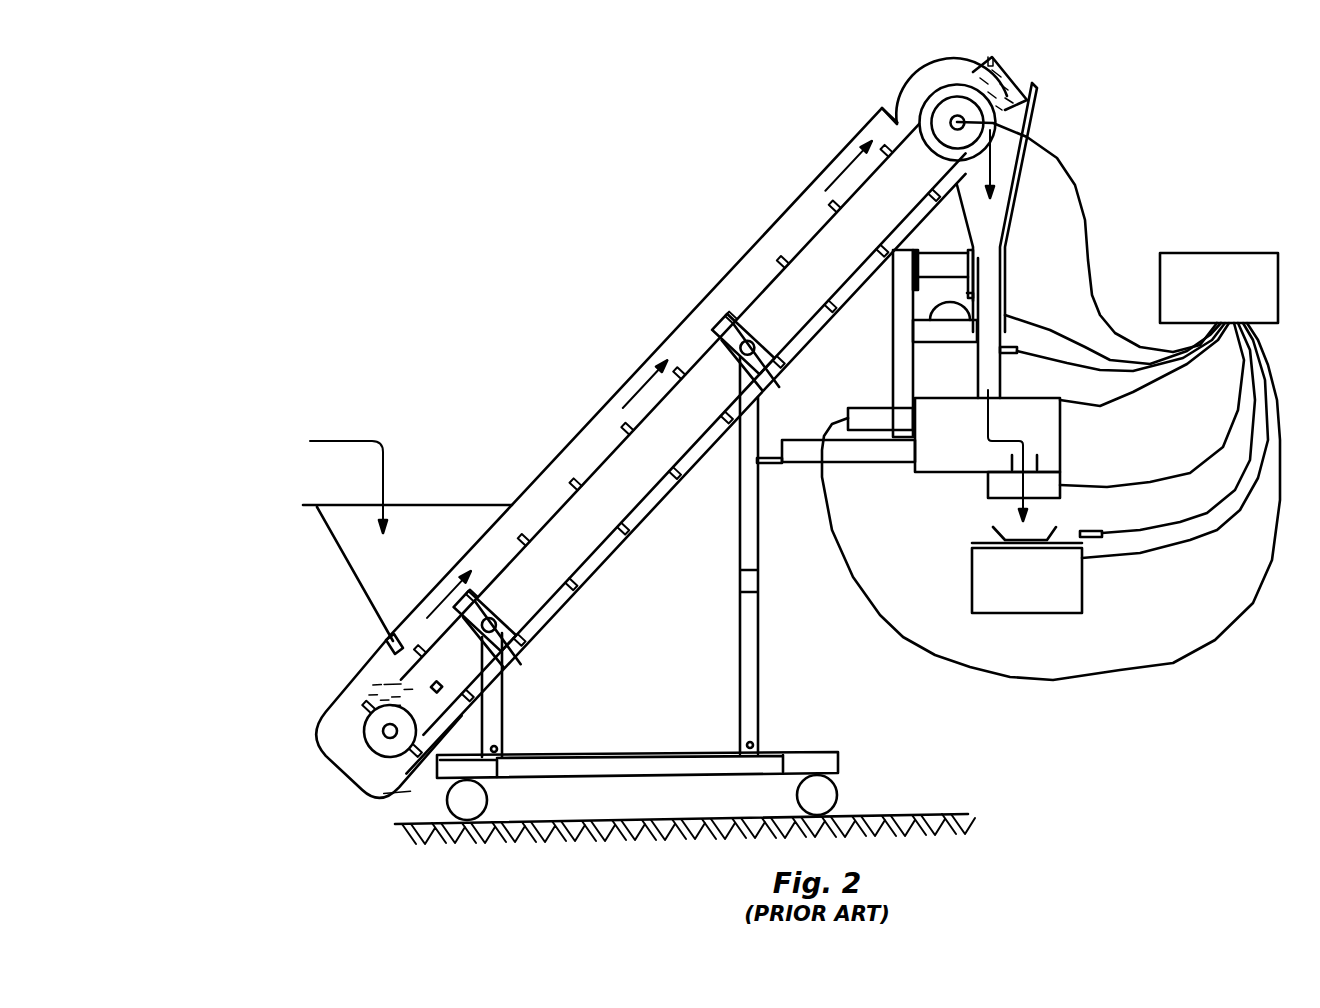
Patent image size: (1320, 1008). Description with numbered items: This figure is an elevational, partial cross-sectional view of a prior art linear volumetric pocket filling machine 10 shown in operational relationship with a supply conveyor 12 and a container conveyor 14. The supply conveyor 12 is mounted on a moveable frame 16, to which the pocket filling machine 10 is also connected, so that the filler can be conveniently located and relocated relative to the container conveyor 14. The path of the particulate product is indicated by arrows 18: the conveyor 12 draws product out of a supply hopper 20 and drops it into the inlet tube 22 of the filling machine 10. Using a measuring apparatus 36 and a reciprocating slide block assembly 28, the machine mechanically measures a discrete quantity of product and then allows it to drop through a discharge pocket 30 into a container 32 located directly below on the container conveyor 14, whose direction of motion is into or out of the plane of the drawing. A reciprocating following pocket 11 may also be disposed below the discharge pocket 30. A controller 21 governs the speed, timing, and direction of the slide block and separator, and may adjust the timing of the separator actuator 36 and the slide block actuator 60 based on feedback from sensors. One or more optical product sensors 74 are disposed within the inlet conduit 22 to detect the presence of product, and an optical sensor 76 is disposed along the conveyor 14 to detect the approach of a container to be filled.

The volumetric pocket filling machine 10 is at (1107, 255).
The reciprocating following pocket 11 is at (990, 497).
The supply conveyor 12 is at (684, 271).
The container conveyor 14 is at (1120, 468).
The moveable frame 16 is at (753, 670).
The arrows 18 is at (347, 440).
The supply hopper 20 is at (410, 553).
The controller 21 is at (1215, 280).
The inlet tube 22 is at (990, 224).
The slide block assembly 28 is at (943, 457).
The discharge pocket 30 is at (1040, 463).
The container 32 is at (993, 533).
The measuring apparatus 36 is at (927, 330).
The slide block actuator 60 is at (873, 420).
The optical product sensor 74 is at (1017, 352).
The optical sensor 76 is at (1095, 530).